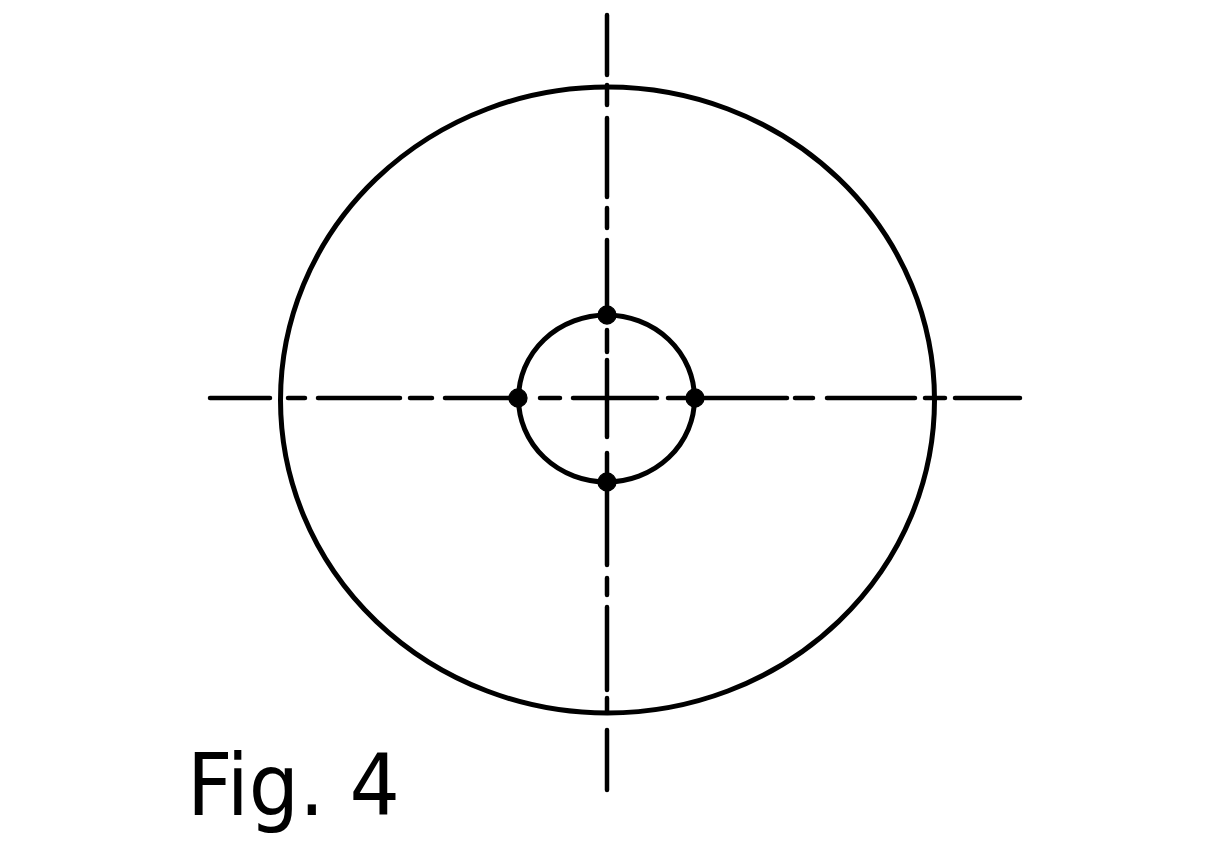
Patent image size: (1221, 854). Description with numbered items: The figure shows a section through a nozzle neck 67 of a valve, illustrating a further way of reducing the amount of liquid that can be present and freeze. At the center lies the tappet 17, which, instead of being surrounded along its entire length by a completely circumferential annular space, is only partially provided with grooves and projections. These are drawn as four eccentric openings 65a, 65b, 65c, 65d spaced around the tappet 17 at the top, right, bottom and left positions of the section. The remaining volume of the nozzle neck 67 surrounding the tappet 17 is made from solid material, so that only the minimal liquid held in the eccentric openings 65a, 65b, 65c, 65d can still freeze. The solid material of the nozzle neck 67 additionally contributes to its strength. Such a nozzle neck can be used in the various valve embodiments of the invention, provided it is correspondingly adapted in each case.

The tappet 17 is at (638, 433).
The nozzle neck 67 is at (770, 245).
The eccentric opening 65a is at (607, 315).
The eccentric opening 65b is at (695, 398).
The eccentric opening 65c is at (607, 482).
The eccentric opening 65d is at (518, 398).